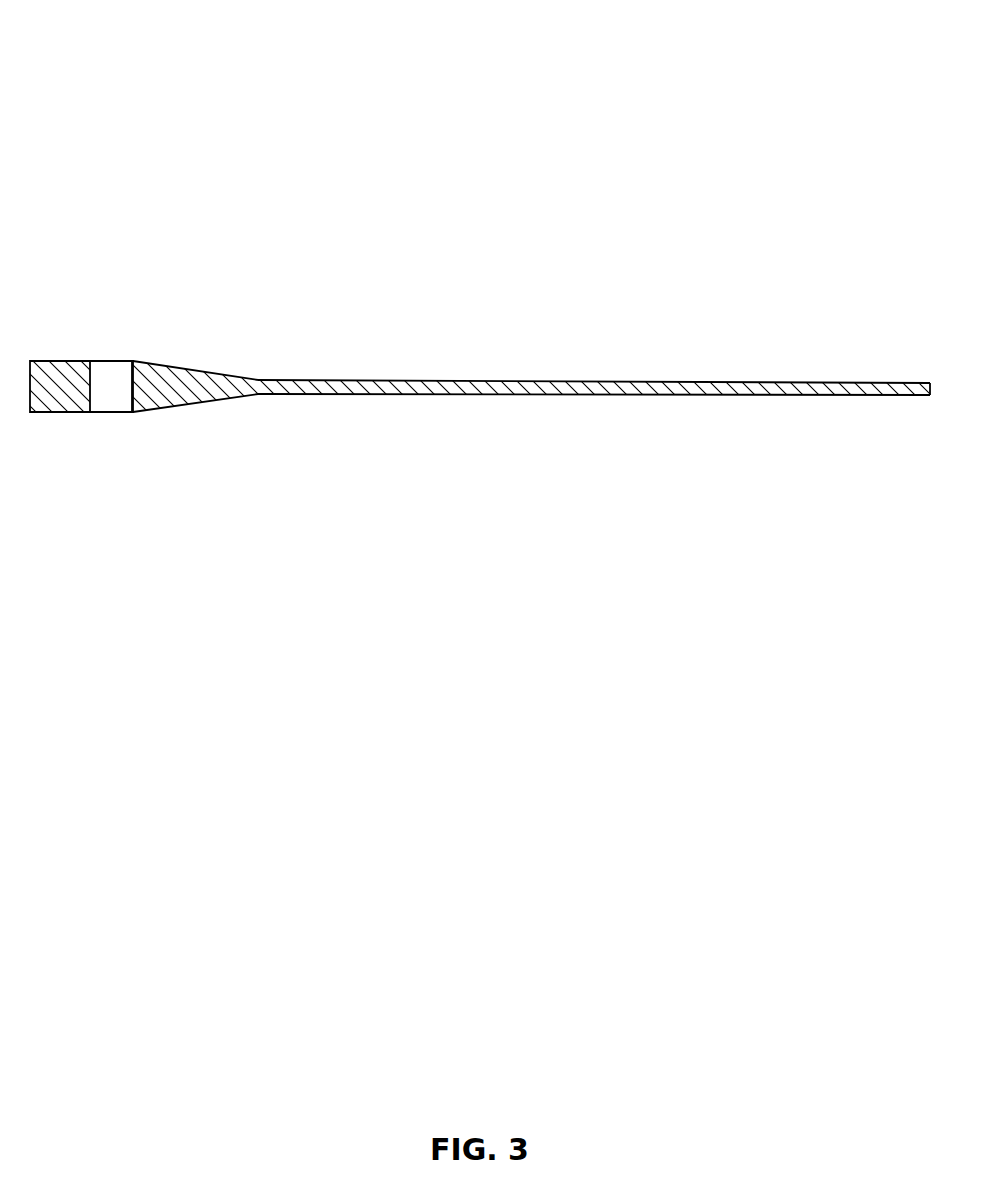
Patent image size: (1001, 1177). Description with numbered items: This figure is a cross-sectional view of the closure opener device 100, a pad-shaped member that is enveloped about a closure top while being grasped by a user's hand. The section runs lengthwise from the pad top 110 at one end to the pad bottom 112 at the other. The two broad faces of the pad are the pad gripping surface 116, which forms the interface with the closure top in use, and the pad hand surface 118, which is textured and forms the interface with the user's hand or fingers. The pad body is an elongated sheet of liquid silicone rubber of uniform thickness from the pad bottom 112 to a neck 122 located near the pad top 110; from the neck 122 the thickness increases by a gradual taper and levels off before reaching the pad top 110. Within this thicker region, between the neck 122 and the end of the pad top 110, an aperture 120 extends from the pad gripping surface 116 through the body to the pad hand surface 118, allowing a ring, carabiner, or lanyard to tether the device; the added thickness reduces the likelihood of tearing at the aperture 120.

The closure opener device 100 is at (163, 121).
The pad top 110 is at (32, 412).
The pad bottom 112 is at (930, 395).
The pad gripping surface 116 is at (407, 376).
The pad hand surface 118 is at (655, 395).
The aperture 120 is at (113, 396).
The neck 122 is at (223, 398).